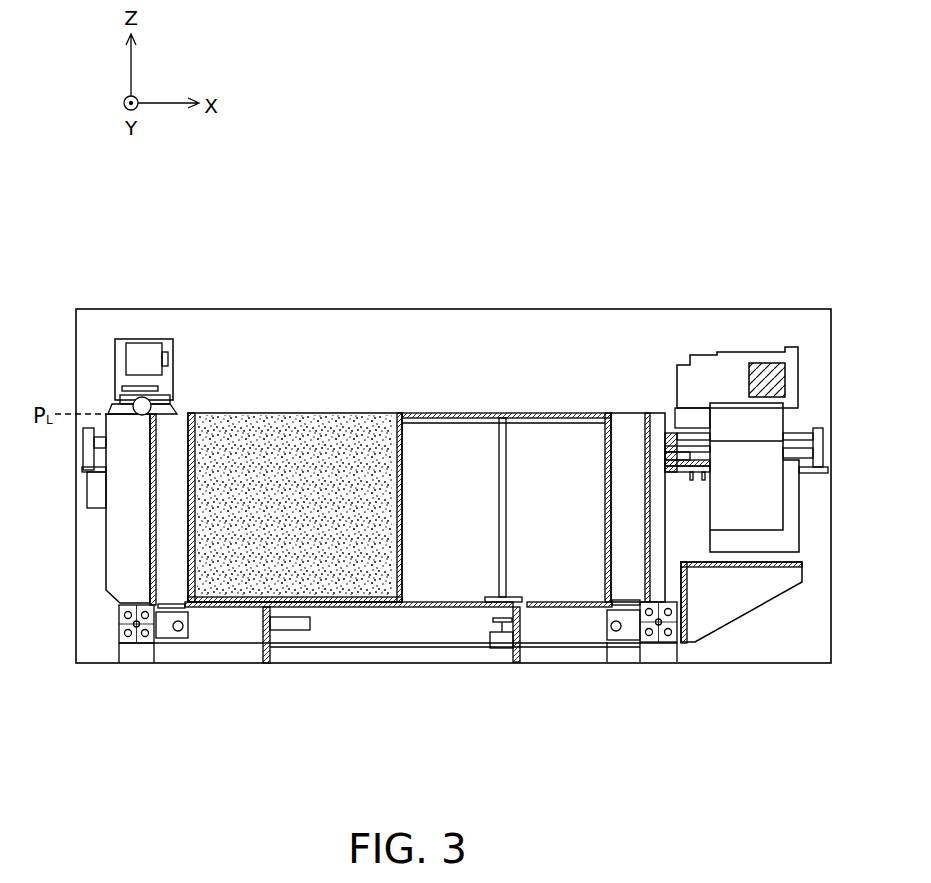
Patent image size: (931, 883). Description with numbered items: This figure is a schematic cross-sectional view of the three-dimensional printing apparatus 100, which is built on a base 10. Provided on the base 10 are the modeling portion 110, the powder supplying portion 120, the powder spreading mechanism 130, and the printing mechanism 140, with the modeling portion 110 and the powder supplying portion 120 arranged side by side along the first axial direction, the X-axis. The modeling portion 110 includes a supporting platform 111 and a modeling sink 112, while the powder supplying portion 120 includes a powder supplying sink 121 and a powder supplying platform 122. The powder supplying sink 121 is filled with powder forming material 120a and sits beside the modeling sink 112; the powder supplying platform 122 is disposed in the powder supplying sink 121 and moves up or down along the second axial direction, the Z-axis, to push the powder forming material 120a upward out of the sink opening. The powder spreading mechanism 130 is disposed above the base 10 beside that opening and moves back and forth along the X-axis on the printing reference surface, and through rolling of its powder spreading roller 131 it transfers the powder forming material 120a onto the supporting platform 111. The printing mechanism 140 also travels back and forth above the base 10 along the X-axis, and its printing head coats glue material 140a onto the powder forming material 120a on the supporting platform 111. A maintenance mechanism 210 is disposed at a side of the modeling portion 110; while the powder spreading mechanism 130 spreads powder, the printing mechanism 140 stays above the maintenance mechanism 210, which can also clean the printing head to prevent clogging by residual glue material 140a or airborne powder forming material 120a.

The base 10 is at (106, 563).
The three-dimensional printing apparatus 100 is at (794, 743).
The modeling portion 110 is at (507, 485).
The supporting platform 111 is at (560, 421).
The modeling sink 112 is at (568, 604).
The powder supplying portion 120 is at (295, 483).
The powder forming material 120a is at (357, 567).
The powder supplying sink 121 is at (205, 609).
The powder supplying platform 122 is at (233, 599).
The powder spreading mechanism 130 is at (148, 346).
The powder spreading roller 131 is at (140, 407).
The printing mechanism 140 is at (737, 320).
The glue material 140a is at (769, 370).
The maintenance mechanism 210 is at (777, 420).